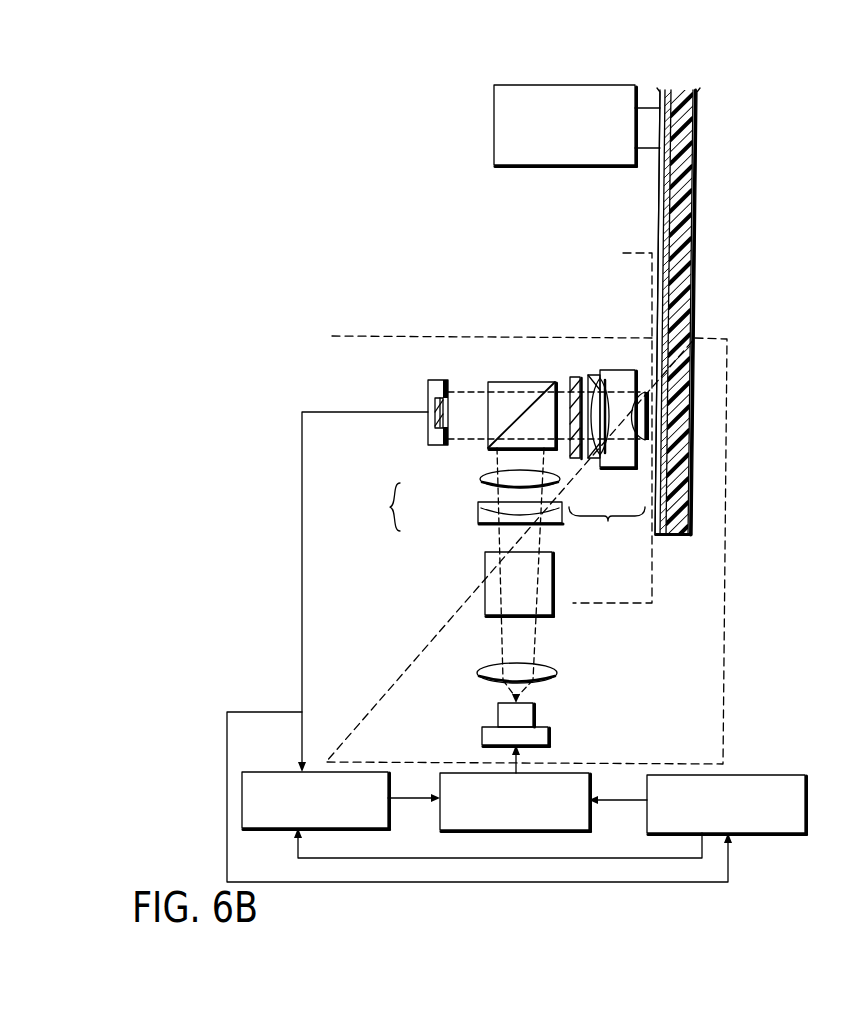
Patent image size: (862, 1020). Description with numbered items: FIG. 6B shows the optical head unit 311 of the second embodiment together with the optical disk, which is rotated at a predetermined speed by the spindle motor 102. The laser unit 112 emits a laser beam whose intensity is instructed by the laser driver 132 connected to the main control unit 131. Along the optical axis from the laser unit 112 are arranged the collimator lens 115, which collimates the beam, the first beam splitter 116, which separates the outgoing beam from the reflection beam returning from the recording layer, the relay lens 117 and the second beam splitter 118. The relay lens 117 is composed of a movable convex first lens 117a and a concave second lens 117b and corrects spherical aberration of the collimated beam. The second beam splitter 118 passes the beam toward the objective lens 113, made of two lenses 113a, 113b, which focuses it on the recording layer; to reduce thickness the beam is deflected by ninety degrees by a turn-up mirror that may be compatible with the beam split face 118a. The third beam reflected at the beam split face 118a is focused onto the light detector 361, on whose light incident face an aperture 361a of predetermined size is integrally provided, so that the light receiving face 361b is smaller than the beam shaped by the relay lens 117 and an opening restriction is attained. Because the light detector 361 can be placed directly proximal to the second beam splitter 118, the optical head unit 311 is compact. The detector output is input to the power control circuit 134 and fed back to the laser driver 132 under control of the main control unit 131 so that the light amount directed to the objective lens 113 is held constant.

The spindle motor 102 is at (566, 167).
The optical head unit 311 is at (412, 334).
The light detector 361 is at (428, 385).
The aperture 361a is at (448, 446).
The light receiving face 361b is at (436, 408).
The second beam splitter 118 is at (489, 446).
The beam splitting surface 118a is at (527, 404).
The relay lens 117 is at (378, 507).
The first lens 117a is at (480, 480).
The second lens 117b is at (478, 508).
The objective lens 113 is at (607, 527).
The lens 113a is at (635, 469).
The lens 113b is at (597, 462).
The first beam splitter 116 is at (485, 578).
The collimator lens 115 is at (478, 673).
The laser unit 112 is at (482, 737).
The power control circuit 134 is at (266, 830).
The laser driver 132 is at (590, 821).
The main control unit 131 is at (806, 806).